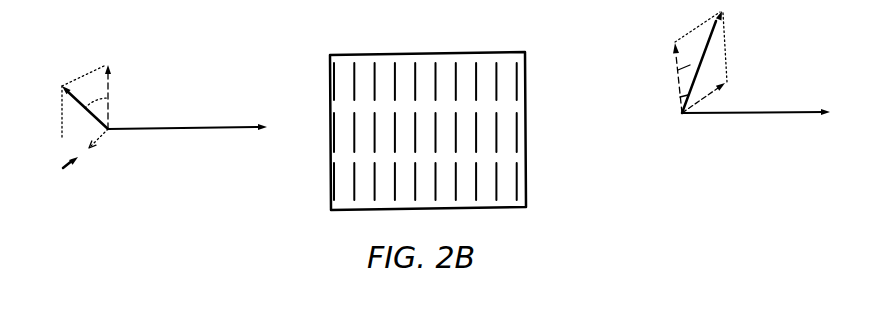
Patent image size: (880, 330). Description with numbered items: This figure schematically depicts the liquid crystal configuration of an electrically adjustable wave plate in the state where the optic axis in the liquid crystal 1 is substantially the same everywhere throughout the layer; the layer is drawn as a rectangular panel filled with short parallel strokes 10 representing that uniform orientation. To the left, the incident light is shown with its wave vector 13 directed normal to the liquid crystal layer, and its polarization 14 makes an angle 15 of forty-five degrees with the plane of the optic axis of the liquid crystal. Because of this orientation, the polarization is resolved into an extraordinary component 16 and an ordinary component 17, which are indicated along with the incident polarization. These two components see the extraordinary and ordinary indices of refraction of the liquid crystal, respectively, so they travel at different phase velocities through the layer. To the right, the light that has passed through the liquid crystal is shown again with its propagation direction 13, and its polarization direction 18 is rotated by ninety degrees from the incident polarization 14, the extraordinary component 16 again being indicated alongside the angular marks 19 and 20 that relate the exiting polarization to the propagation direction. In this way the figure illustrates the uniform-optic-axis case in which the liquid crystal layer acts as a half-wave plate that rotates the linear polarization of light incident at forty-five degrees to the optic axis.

The liquid crystal 1 is at (428, 60).
The grating lines 10 is at (353, 175).
The wave vector 13 is at (170, 130).
The polarization 14 is at (61, 138).
The angle 15 is at (105, 97).
The extraordinary component 16 is at (109, 100).
The ordinary component 17 is at (95, 158).
The polarization direction 18 is at (713, 31).
The angle between normal and reflected beam 19 is at (680, 97).
The angle of transmitted beam 20 is at (700, 100).